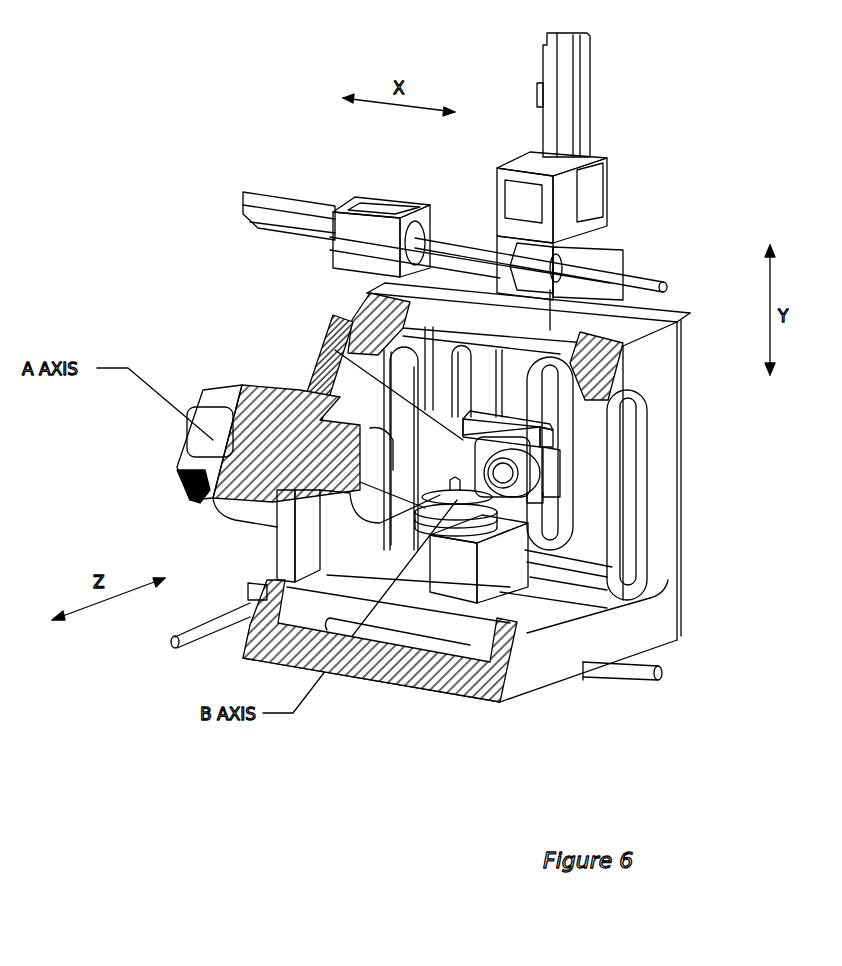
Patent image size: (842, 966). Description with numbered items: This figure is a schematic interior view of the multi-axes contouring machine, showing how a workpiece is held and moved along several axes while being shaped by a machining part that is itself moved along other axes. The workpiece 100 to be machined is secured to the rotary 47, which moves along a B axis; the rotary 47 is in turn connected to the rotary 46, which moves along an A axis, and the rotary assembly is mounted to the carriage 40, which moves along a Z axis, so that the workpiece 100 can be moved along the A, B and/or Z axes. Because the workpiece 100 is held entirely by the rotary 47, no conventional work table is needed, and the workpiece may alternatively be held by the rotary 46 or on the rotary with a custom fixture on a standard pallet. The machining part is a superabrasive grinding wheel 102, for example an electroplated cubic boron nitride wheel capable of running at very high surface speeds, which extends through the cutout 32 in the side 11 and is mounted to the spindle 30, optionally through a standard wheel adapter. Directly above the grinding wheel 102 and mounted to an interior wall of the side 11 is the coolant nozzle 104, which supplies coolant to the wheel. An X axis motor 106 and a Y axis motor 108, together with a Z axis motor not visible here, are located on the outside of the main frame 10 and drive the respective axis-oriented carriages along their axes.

The main frame 10 is at (670, 447).
The side 11 is at (562, 382).
The spindle 30 is at (564, 450).
The cutout 32 is at (557, 413).
The carriage 40 is at (303, 350).
The rotary 46 is at (257, 517).
The rotary 47 is at (462, 500).
The workpiece 100 is at (560, 582).
The superabrasive grinding wheel 102 is at (298, 384).
The coolant nozzle 104 is at (275, 304).
The X axis motor 106 is at (380, 191).
The Y axis motor 108 is at (625, 166).